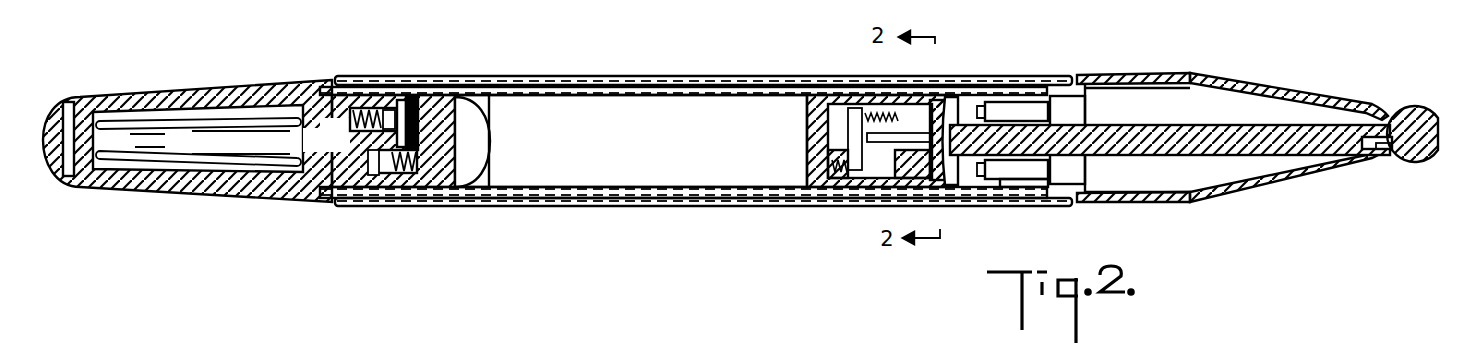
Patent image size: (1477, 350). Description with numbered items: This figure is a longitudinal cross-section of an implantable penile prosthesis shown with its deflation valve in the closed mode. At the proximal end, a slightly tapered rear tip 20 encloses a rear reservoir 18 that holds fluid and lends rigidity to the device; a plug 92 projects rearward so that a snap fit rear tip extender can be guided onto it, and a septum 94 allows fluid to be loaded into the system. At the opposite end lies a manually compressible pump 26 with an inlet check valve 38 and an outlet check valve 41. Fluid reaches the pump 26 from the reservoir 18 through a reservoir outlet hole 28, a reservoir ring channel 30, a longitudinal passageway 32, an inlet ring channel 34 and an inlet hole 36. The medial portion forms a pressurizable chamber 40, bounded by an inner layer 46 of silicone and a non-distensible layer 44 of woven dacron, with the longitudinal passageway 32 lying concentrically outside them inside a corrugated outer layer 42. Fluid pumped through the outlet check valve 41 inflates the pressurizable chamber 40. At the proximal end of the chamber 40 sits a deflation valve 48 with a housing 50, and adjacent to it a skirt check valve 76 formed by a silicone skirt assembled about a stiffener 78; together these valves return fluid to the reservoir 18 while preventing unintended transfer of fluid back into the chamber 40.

The rear reservoir 18 is at (1165, 115).
The rear tip 20 is at (1298, 93).
The pump 26 is at (217, 117).
The reservoir outlet hole 28 is at (1030, 186).
The reservoir ring channel 30 is at (1042, 92).
The longitudinal passageway 32 is at (696, 86).
The inlet ring channel 34 is at (420, 200).
The inlet hole 36 is at (418, 107).
The inlet check valve 38 is at (362, 95).
The pressurizable chamber 40 is at (617, 112).
The outlet check valve 41 is at (367, 208).
The outer layer 42 is at (539, 76).
The non-distensible layer 44 is at (560, 206).
The inner layer 46 is at (720, 95).
The deflation valve 48 is at (818, 87).
The housing 50 is at (845, 197).
The skirt check valve 76 is at (984, 92).
The stiffener 78 is at (1178, 196).
The plug 92 is at (1422, 160).
The septum 94 is at (1386, 150).